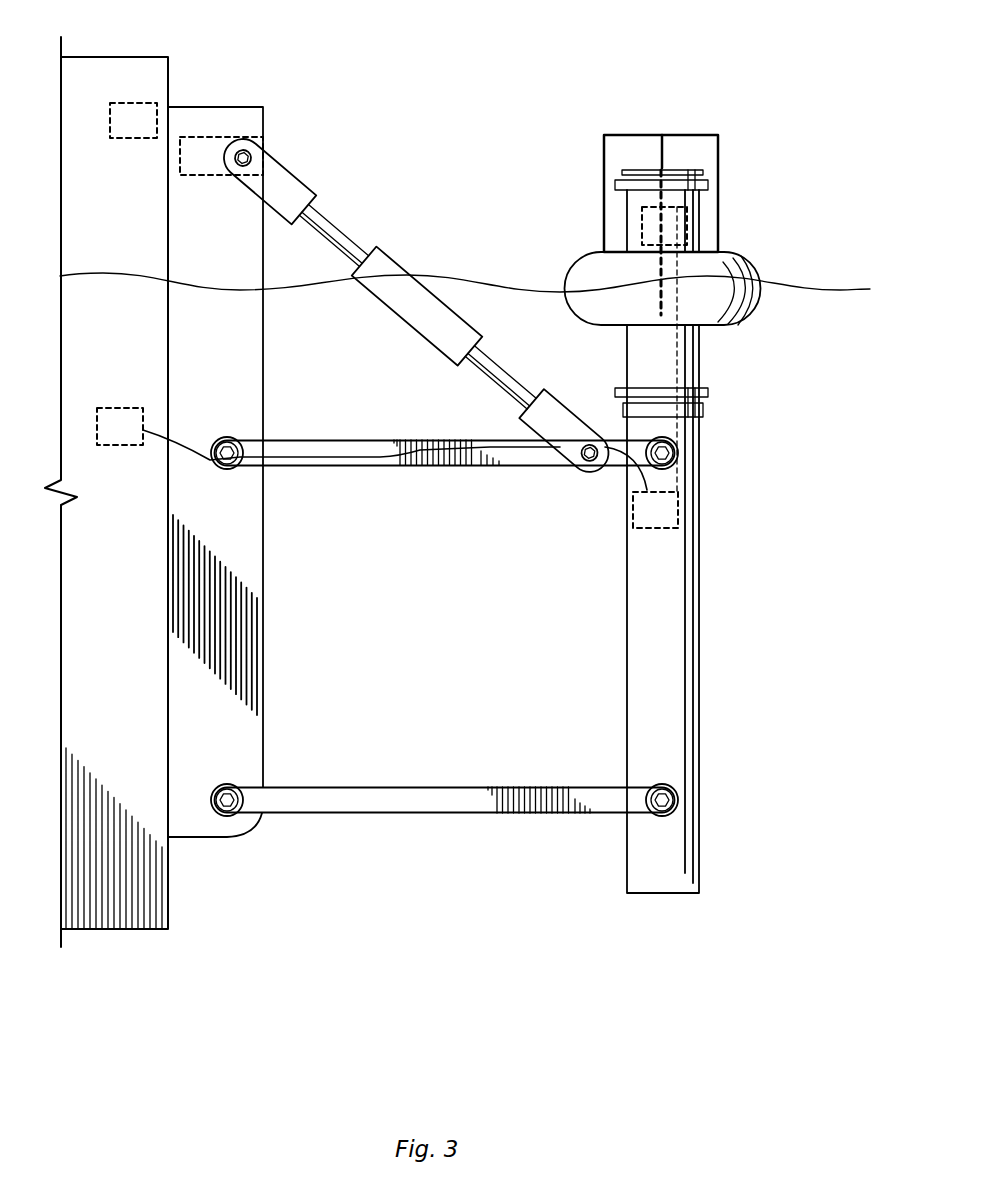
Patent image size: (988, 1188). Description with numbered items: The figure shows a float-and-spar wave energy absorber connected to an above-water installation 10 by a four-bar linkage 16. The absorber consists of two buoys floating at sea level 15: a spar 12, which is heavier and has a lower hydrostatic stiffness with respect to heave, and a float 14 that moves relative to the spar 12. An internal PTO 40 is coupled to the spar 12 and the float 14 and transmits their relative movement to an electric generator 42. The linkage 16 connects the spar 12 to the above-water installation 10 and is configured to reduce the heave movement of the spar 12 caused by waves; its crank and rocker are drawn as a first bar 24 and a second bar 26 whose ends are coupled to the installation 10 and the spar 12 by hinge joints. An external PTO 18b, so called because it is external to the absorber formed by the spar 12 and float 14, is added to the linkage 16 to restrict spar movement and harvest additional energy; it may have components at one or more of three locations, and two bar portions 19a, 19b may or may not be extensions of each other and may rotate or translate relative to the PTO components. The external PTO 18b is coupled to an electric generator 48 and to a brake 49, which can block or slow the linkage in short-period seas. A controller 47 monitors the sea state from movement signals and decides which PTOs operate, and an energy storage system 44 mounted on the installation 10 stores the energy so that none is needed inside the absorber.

The above-water installation 10 is at (117, 57).
The spar 12 is at (627, 219).
The float 14 is at (733, 252).
The sea level 15 is at (487, 280).
The linkage 16 is at (444, 598).
The external PTO 18b is at (416, 284).
The bar portion 19a is at (333, 236).
The bar portion 19b is at (500, 377).
The first bar 24 is at (520, 467).
The second bar 26 is at (492, 785).
The PTO 40 is at (687, 227).
The electric generator 42 is at (680, 512).
The energy storage system 44 is at (122, 408).
The controller 47 is at (140, 103).
The electric generator 48 is at (205, 137).
The brake 49 is at (243, 158).